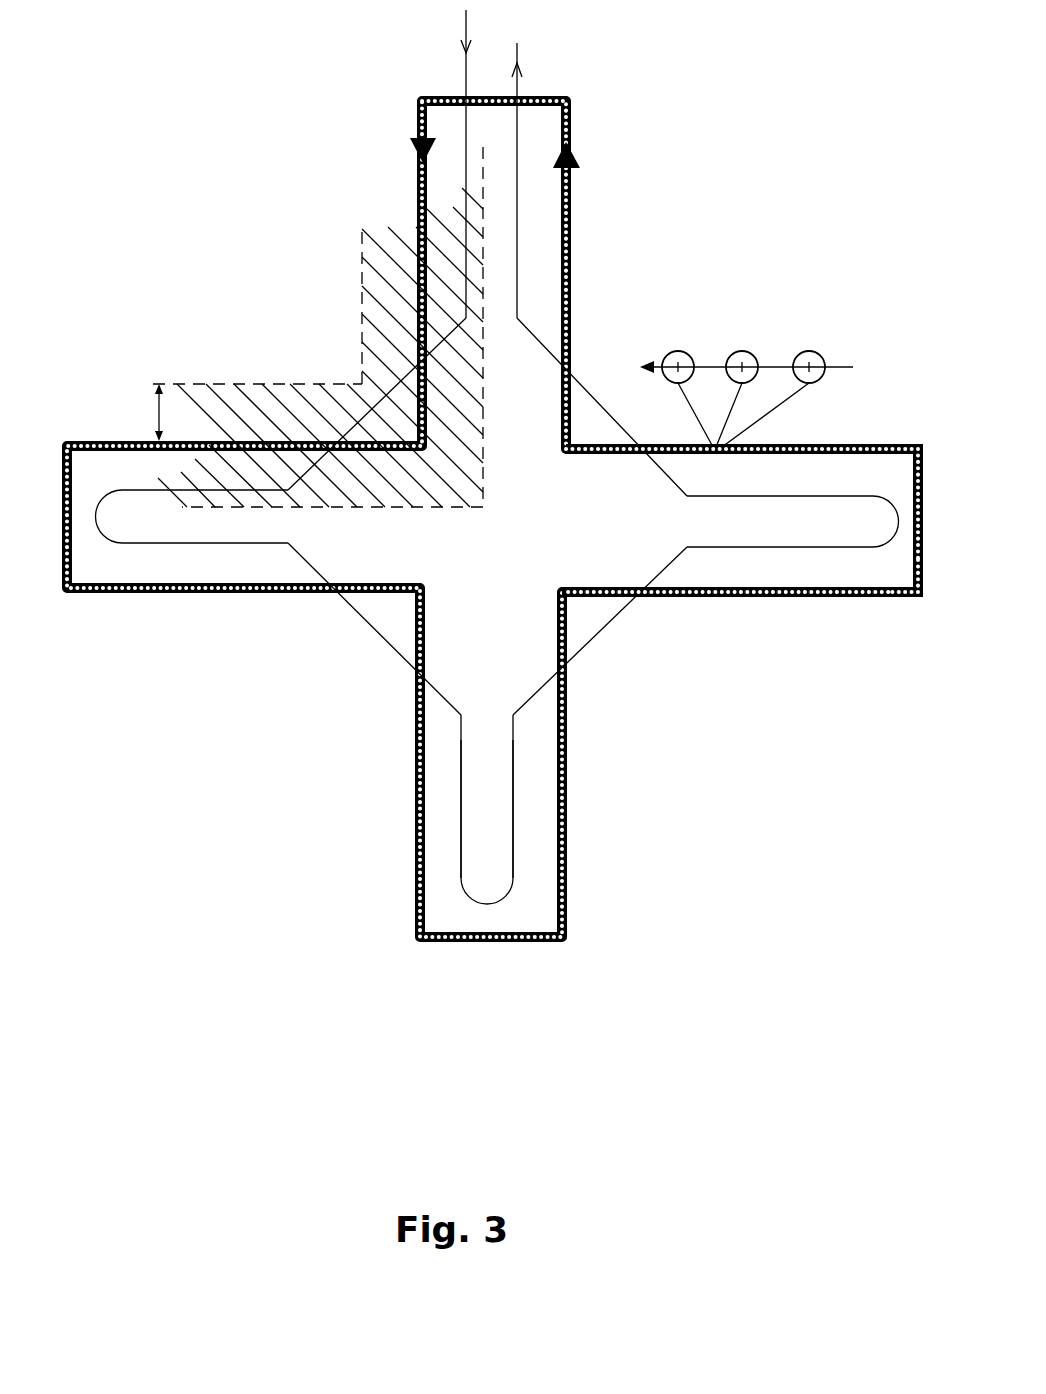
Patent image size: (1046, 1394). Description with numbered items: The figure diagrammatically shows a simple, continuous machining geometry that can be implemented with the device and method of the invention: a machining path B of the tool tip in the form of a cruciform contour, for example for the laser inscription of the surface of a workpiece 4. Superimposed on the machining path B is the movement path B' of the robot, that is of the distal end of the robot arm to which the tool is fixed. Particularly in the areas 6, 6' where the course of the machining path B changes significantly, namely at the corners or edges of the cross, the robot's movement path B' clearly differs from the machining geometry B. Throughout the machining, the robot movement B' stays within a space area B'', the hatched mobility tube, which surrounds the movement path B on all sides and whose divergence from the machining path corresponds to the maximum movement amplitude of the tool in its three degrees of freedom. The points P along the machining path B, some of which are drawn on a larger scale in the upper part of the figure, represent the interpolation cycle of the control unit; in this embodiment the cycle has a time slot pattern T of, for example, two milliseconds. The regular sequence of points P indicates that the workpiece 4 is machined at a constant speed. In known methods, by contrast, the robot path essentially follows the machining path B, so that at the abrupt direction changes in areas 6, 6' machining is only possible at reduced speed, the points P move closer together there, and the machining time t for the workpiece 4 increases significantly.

The workpiece 4 is at (743, 815).
The area of significant change of machining path 6 is at (740, 557).
The area of significant change of machining path 6' is at (888, 644).
The machining path B is at (513, 897).
The movement path of the robot B' is at (496, 362).
The space area (mobility tube) B'' is at (318, 327).
The points along the machining path P is at (677, 348).
The time slot pattern T is at (708, 362).
The machining time t is at (758, 367).